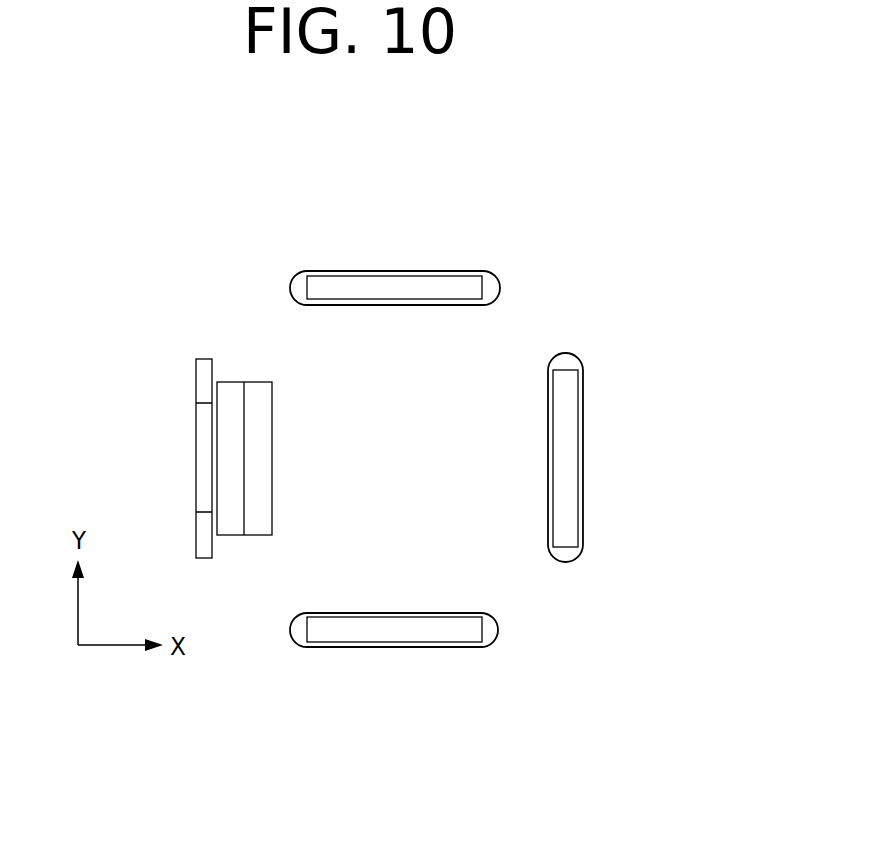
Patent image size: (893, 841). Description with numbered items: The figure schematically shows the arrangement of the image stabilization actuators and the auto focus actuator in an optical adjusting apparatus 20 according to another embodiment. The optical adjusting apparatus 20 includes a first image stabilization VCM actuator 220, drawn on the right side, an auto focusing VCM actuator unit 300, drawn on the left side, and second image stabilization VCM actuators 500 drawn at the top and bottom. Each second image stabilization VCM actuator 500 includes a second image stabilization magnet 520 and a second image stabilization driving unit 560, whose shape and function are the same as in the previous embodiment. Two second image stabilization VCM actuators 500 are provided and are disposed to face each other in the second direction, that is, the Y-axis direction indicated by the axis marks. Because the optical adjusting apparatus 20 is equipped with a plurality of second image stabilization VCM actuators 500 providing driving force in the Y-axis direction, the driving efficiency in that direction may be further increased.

The optical adjusting apparatus 20 is at (177, 252).
The auto focusing VCM actuator unit 300 is at (190, 452).
The first image stabilization VCM actuator 220 is at (590, 453).
The second image stabilization VCM actuator 500 is at (398, 260).
The second image stabilization magnet 520 is at (465, 282).
The second image stabilization driving unit 560 is at (493, 282).